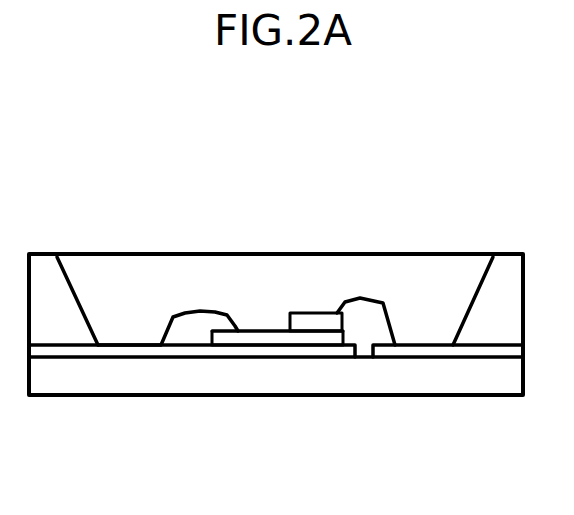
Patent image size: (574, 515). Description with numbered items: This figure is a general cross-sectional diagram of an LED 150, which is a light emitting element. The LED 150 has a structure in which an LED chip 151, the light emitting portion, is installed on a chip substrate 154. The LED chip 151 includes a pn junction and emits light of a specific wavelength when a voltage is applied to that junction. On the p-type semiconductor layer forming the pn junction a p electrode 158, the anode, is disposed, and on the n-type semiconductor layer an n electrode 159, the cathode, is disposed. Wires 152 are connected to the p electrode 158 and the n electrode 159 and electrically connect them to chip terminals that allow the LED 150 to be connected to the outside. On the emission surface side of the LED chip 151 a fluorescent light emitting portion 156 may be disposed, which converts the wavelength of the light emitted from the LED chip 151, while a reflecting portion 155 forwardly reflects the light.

The LED 150 is at (248, 403).
The LED chip 151 is at (268, 337).
The wires 152 is at (172, 314).
The chip substrate 154 is at (178, 375).
The reflecting portion 155 is at (68, 270).
The fluorescent light emitting portion 156 is at (118, 292).
The p electrode 158 is at (302, 318).
The n electrode 159 is at (238, 337).